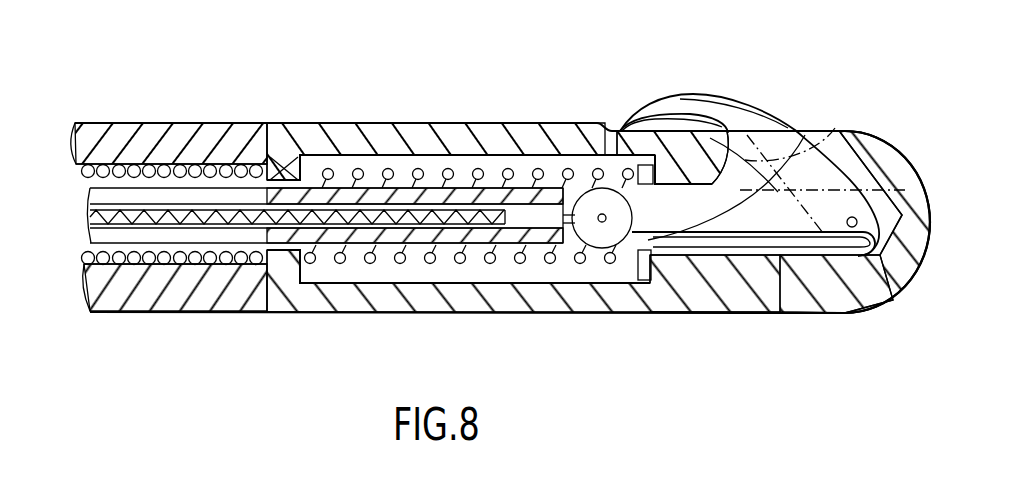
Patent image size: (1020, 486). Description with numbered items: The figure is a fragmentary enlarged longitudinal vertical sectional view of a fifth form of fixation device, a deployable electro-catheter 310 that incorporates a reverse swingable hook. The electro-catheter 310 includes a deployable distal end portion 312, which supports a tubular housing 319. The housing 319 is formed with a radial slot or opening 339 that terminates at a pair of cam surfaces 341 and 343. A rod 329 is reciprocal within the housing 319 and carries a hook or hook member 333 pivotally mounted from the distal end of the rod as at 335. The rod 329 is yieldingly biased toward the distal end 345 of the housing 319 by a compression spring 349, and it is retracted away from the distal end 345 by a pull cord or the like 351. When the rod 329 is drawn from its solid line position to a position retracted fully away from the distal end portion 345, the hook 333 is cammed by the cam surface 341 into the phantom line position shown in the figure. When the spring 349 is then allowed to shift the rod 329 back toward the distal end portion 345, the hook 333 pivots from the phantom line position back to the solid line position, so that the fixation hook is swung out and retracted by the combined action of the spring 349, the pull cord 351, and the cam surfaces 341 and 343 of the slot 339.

The deployable electro-catheter 310 is at (303, 118).
The deployable distal end portion 312 is at (188, 295).
The tubular housing 319 is at (537, 313).
The rod 329 is at (772, 225).
The hook member 333 is at (790, 130).
The pivot mounting of the hook 335 is at (870, 313).
The radial slot 339 is at (745, 133).
The cam surface 341 is at (720, 120).
The cam surface 343 is at (830, 130).
The distal end of the housing 345 is at (930, 205).
The compression spring 349 is at (390, 263).
The pull cord 351 is at (227, 213).